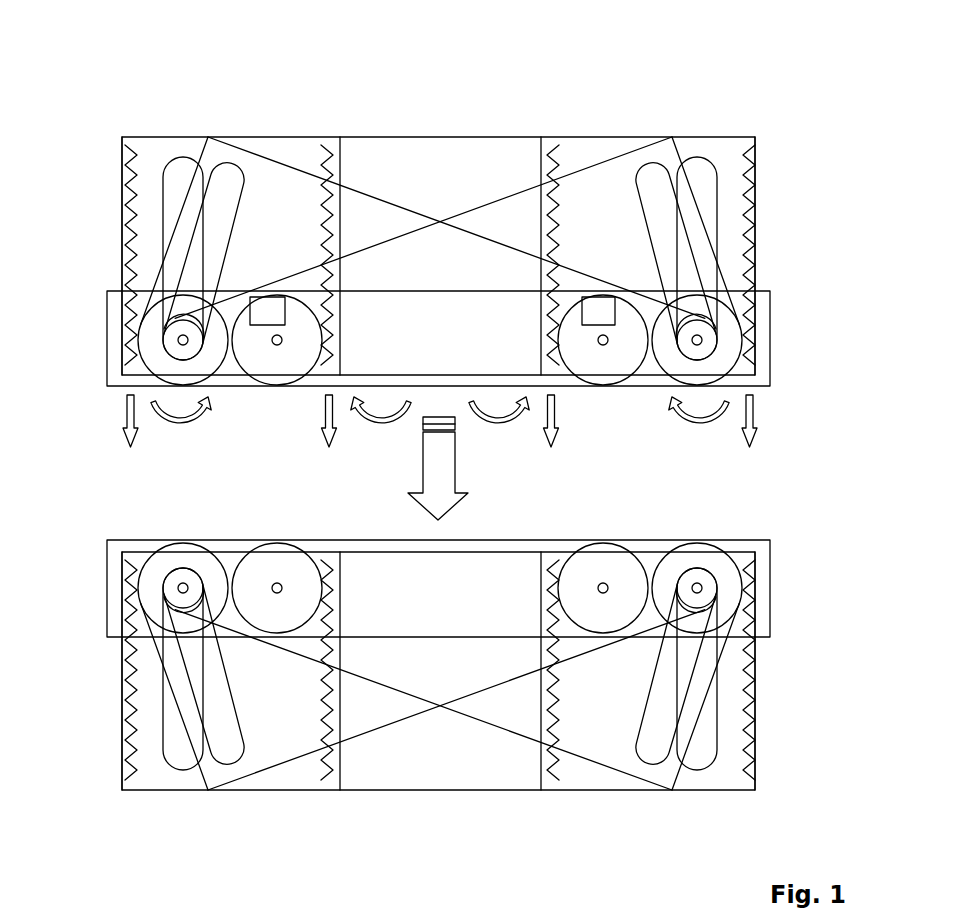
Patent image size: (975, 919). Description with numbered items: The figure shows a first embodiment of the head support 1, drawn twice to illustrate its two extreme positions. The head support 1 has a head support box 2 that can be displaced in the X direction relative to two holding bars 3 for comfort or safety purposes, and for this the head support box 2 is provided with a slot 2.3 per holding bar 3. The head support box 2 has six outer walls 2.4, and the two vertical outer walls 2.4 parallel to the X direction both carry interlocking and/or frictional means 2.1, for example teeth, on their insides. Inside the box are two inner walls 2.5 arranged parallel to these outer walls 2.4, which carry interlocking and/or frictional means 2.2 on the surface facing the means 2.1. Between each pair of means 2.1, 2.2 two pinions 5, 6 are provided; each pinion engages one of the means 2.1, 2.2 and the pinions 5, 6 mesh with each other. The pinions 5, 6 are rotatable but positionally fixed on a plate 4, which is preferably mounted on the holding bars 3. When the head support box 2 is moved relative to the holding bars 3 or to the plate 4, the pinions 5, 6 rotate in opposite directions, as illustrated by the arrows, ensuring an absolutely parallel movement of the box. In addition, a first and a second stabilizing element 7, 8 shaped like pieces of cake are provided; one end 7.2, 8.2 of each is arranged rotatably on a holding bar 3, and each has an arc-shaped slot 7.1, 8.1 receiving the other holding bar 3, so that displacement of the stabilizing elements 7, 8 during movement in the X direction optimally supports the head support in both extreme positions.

The head support 1 is at (637, 79).
The head support box 2 is at (402, 128).
The interlocking and/or frictional means 2.1 is at (139, 160).
The interlocking and/or frictional means 2.2 is at (323, 152).
The slot 2.3 is at (180, 168).
The outer walls 2.4 is at (122, 142).
The inner walls 2.5 is at (333, 228).
The holding bars 3 is at (182, 357).
The plate 4 is at (395, 355).
The pinion 5 is at (142, 386).
The pinion 6 is at (300, 360).
The first stabilizing element 7 is at (520, 205).
The slot 7.1 is at (652, 750).
The end 7.2 is at (168, 327).
The second stabilizing element 8 is at (384, 205).
The slot 8.1 is at (227, 752).
The end 8.2 is at (717, 345).
The X direction X is at (442, 455).